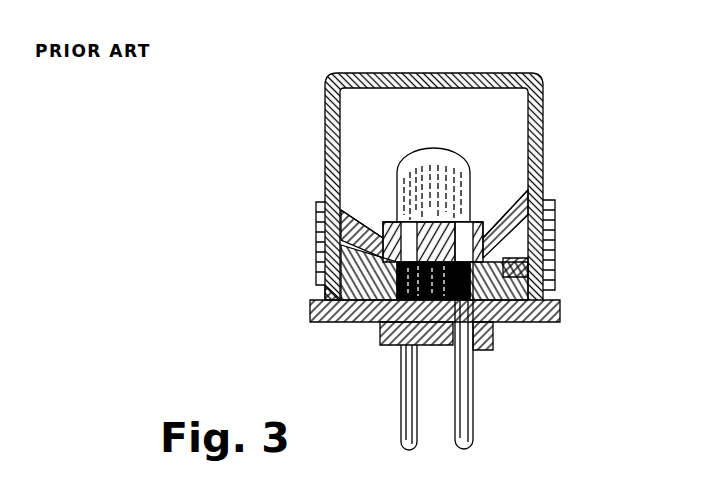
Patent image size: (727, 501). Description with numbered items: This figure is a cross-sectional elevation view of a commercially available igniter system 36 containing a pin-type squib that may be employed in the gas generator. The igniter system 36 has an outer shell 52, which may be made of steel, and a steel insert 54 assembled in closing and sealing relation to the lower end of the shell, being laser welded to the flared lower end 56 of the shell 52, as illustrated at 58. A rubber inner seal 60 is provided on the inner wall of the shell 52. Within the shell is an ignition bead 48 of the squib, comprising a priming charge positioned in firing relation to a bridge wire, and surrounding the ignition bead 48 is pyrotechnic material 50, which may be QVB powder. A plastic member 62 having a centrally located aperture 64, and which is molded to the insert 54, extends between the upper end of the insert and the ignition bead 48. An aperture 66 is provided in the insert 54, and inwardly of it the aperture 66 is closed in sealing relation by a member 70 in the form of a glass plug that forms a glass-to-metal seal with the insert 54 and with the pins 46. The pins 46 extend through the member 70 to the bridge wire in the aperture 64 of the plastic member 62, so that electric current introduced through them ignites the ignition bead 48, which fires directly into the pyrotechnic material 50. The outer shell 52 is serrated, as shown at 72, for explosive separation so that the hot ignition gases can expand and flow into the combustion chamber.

The igniter system 36 is at (310, 62).
The pins 46 is at (458, 440).
The ignition bead 48 is at (406, 148).
The pyrotechnic material 50 is at (348, 140).
The outer shell 52 is at (327, 106).
The insert 54 is at (325, 262).
The flared lower end 56 is at (330, 284).
The laser weld 58 is at (330, 297).
The rubber inner seal 60 is at (331, 178).
The plastic member 62 is at (341, 212).
The aperture 64 is at (528, 192).
The aperture 66 is at (517, 322).
The member 70 is at (493, 323).
The serrations 72 is at (538, 141).